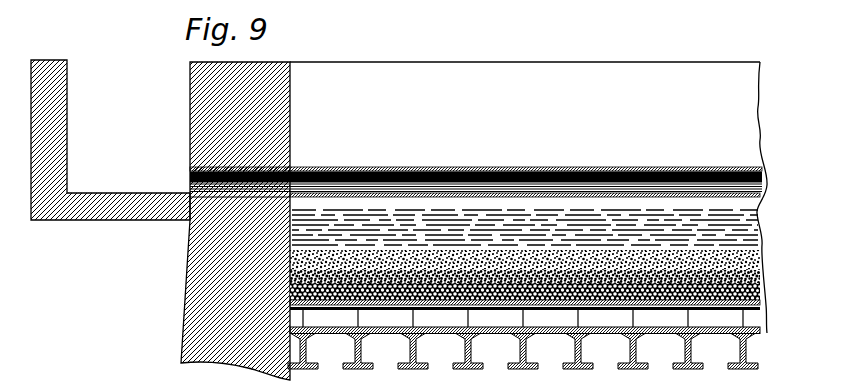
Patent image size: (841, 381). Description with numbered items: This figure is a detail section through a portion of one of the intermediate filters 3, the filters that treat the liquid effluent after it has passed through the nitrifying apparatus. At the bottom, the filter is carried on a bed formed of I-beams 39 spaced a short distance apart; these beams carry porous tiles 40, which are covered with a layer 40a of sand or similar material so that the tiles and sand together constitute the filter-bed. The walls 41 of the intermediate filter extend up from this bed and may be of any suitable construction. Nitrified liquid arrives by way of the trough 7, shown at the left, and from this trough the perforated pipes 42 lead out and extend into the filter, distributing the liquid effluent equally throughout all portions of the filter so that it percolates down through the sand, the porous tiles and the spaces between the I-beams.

The intermediate filter 3 is at (528, 179).
The trough 7 is at (110, 140).
The I-beams 39 is at (523, 352).
The porous tiles 40 is at (525, 320).
The layer of sand 40a is at (762, 272).
The walls 41 is at (525, 114).
The perforated pipes 42 is at (476, 172).